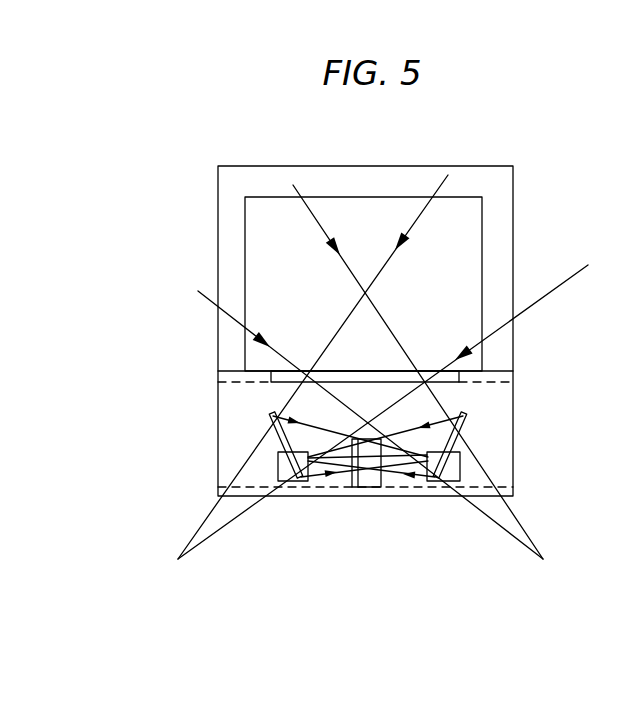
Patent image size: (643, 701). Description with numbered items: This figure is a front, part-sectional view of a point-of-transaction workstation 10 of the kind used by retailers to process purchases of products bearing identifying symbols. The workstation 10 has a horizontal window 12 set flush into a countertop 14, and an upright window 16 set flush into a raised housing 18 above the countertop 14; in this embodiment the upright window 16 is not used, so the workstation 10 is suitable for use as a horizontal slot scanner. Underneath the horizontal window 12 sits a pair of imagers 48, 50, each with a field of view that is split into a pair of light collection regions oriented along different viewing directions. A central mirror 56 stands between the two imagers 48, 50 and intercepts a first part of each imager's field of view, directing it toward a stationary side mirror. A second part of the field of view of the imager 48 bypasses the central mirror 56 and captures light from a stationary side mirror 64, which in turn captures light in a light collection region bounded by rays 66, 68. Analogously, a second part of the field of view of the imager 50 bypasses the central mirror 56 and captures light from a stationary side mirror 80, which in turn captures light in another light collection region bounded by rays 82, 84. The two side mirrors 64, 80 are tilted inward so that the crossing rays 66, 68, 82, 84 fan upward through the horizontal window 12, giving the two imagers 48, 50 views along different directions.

The point-of-transaction workstation 10 is at (152, 152).
The horizontal window 12 is at (388, 380).
The countertop 14 is at (227, 434).
The upright window 16 is at (431, 294).
The raised housing 18 is at (493, 180).
The imager 48 is at (453, 481).
The imager 50 is at (286, 483).
The central mirror 56 is at (367, 478).
The stationary side mirror 64 is at (305, 481).
The light ray 66 is at (441, 188).
The light ray 68 is at (550, 295).
The stationary side mirror 80 is at (466, 420).
The light ray 82 is at (315, 215).
The light ray 84 is at (210, 299).